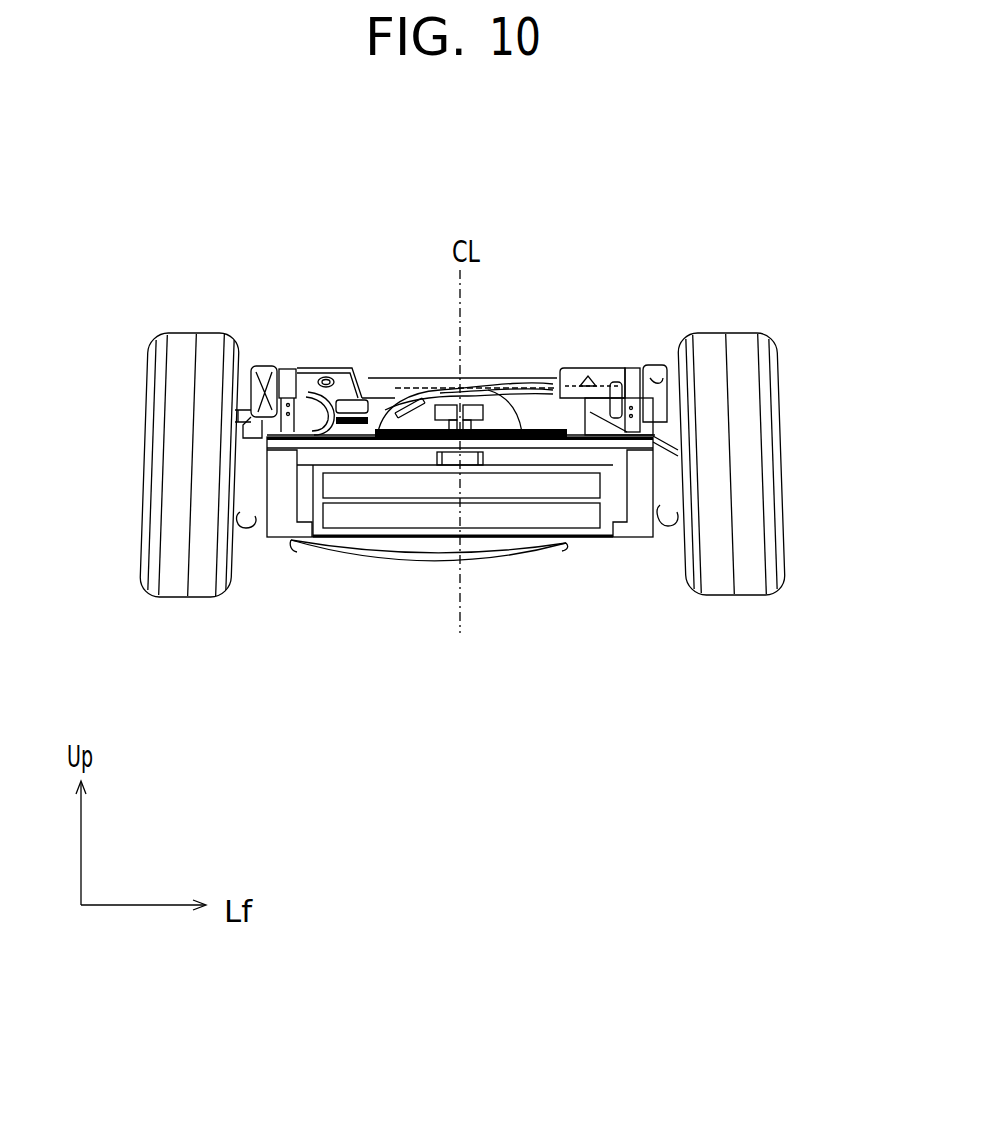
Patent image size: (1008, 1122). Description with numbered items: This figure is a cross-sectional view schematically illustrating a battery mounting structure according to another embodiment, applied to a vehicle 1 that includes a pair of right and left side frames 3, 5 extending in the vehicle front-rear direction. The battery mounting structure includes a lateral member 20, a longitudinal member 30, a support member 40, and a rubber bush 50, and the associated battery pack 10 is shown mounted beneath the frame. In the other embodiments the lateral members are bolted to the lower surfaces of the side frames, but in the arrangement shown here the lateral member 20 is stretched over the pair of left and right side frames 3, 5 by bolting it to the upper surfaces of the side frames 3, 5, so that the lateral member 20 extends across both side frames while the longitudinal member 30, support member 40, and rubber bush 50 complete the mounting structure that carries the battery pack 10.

The vehicle 1 is at (488, 333).
The side frame 3 is at (640, 480).
The side frame 5 is at (290, 482).
The battery pack 10 is at (583, 523).
The lateral member 20 is at (383, 443).
The longitudinal member 30 is at (452, 452).
The support member 40 is at (467, 466).
The rubber bush 50 is at (307, 498).